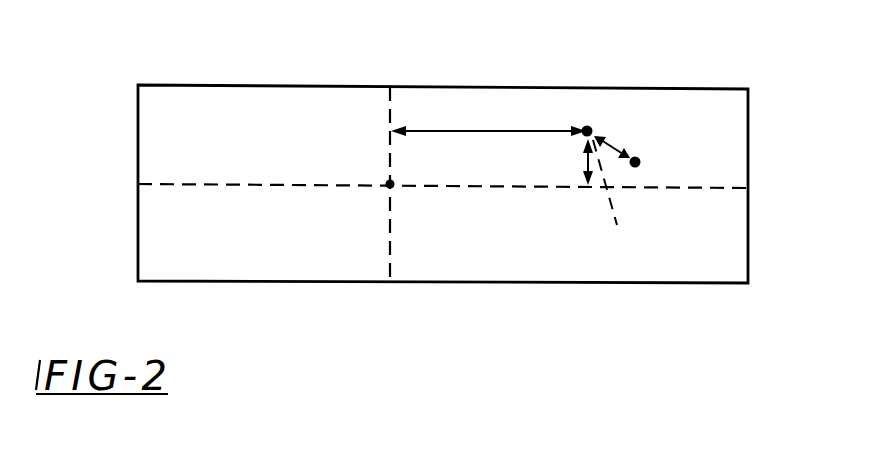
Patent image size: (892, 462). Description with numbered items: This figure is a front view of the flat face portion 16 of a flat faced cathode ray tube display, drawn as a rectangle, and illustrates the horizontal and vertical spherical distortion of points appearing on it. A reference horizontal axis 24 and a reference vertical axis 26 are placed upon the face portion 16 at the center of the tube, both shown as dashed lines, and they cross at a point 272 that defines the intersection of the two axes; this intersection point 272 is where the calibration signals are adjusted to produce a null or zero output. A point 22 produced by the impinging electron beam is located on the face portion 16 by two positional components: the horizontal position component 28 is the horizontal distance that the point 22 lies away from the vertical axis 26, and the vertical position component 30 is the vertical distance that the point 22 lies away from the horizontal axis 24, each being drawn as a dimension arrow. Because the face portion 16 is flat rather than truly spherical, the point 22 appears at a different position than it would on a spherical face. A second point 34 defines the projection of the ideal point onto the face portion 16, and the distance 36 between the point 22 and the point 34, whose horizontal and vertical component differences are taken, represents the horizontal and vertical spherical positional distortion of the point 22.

The flat face portion 16 is at (748, 200).
The point 22 is at (594, 129).
The reference horizontal axis 24 is at (502, 197).
The reference vertical axis 26 is at (390, 105).
The point defining the intersection of axes 272 is at (388, 185).
The horizontal position component 28 is at (485, 131).
The vertical position component 30 is at (586, 159).
The point 34 is at (637, 162).
The distance 36 is at (613, 200).